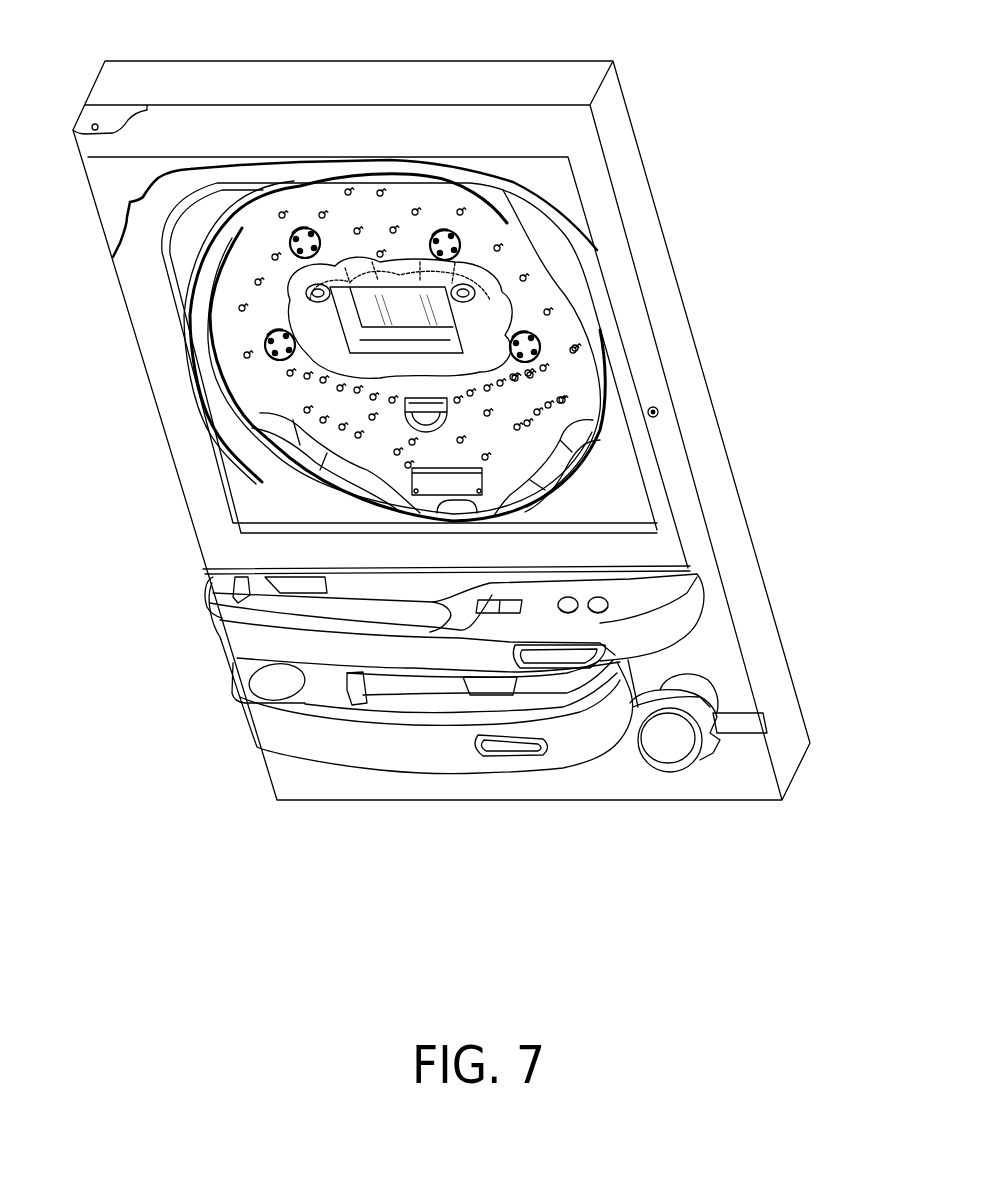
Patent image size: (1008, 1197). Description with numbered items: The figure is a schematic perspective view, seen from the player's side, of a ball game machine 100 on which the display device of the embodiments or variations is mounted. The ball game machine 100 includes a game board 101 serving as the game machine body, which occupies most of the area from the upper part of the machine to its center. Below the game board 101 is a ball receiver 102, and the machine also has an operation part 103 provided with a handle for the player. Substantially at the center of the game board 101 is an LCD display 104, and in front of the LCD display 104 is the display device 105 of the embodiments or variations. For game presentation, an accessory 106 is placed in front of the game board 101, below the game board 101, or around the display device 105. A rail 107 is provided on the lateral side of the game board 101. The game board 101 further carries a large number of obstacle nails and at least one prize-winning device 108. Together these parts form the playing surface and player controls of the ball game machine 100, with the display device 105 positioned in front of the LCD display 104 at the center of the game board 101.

The ball game machine 100 is at (771, 839).
The game board 101 is at (747, 552).
The ball receiver 102 is at (190, 578).
The operation part 103 is at (763, 708).
The LCD display 104 is at (397, 298).
The display device 105 is at (500, 310).
The accessory 106 is at (307, 422).
The rail 107 is at (205, 276).
The prize-winning device 108 is at (440, 413).